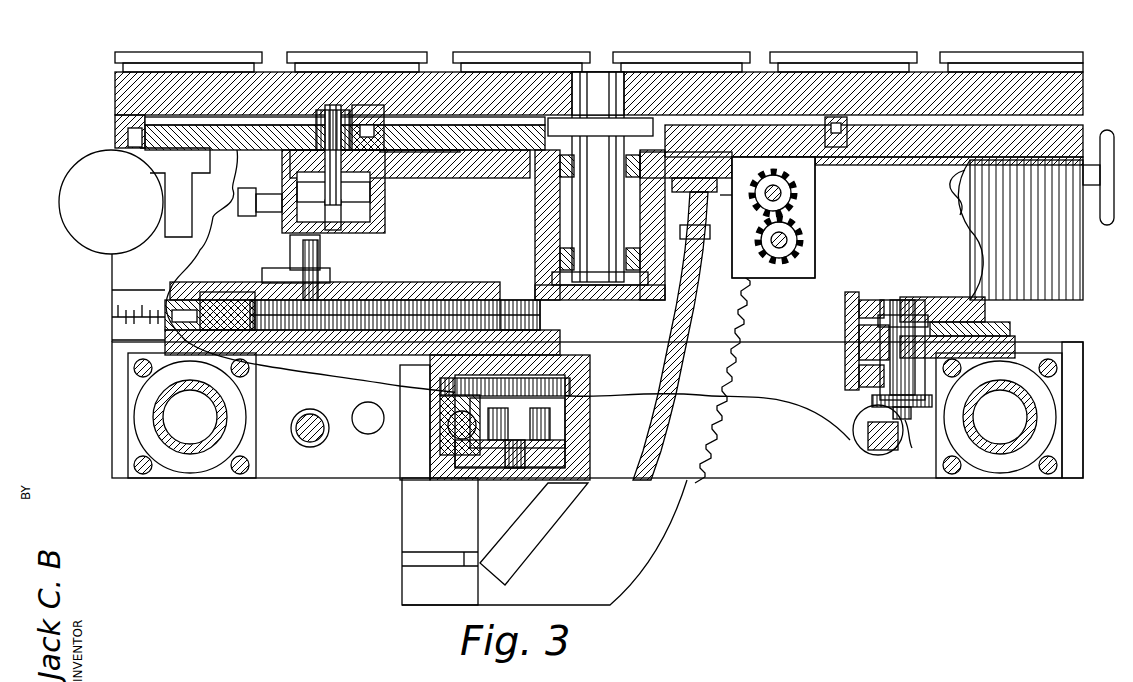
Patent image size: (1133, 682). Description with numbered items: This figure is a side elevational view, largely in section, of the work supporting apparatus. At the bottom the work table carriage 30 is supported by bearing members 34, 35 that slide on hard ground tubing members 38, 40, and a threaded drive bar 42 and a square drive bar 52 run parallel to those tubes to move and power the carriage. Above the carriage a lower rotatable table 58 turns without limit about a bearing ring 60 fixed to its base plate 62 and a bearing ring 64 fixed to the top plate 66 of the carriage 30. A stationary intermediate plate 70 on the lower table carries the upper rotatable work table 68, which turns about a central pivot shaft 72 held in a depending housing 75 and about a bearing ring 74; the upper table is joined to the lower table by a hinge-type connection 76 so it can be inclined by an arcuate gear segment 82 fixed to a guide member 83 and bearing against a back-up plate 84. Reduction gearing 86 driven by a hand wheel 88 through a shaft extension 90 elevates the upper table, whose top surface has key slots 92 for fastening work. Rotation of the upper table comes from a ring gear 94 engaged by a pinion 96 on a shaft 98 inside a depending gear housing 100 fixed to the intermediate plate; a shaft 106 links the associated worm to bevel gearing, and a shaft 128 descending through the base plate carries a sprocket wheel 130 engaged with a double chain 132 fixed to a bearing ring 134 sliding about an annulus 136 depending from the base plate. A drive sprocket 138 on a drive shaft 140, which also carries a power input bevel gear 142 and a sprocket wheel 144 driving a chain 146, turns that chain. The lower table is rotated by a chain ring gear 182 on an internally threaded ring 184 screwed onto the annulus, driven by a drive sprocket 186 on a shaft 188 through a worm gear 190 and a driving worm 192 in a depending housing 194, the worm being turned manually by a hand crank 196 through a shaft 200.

The work table carriage 30 is at (725, 478).
The bearing member 34 is at (178, 470).
The bearing member 35 is at (990, 470).
The hard ground tubing member 38 is at (205, 466).
The hard ground tubing member 40 is at (1012, 470).
The threaded drive bar 42 is at (308, 446).
The square drive bar 52 is at (878, 448).
The lower rotatable table 58 is at (120, 275).
The bearing ring 60 is at (232, 300).
The base plate 62 is at (372, 284).
The bearing ring 64 is at (202, 298).
The top plate 66 is at (312, 345).
The upper rotatable work table 68 is at (922, 72).
The stationary intermediate plate 70 is at (492, 162).
The central pivot shaft 72 is at (572, 238).
The bearing ring 74 is at (140, 122).
The spindle housing 75 is at (535, 218).
The hinge-type connection 76 is at (90, 220).
The arcuate gear segment 82 is at (745, 325).
The guide member 83 is at (680, 330).
The back-up plate 84 is at (452, 178).
The reduction gearing 86 is at (800, 240).
The hand wheel 88 is at (1106, 130).
The shaft extension 90 is at (955, 180).
The key slots 92 is at (440, 60).
The ring gear 94 is at (362, 108).
The pinion 96 is at (318, 120).
The shaft 98 is at (345, 190).
The depending gear housing 100 is at (372, 212).
The shaft 106 is at (246, 195).
The shaft 128 is at (310, 240).
The sprocket wheel 130 is at (280, 282).
The double chain 132 is at (545, 318).
The bearing ring 134 is at (845, 316).
The annulus 136 is at (845, 348).
The drive sprocket 138 is at (905, 300).
The drive shaft 140 is at (925, 365).
The power input bevel gear 142 is at (910, 432).
The sprocket wheel 144 is at (920, 420).
The chain 146 is at (872, 402).
The chain ring gear 182 is at (440, 400).
The internally threaded ring 184 is at (845, 376).
The drive sprocket 186 is at (560, 360).
The shaft 188 is at (515, 468).
The worm gear 190 is at (565, 425).
The driving worm 192 is at (452, 460).
The depending housing 194 is at (410, 432).
The hand crank 196 is at (368, 434).
The shaft 200 is at (460, 430).